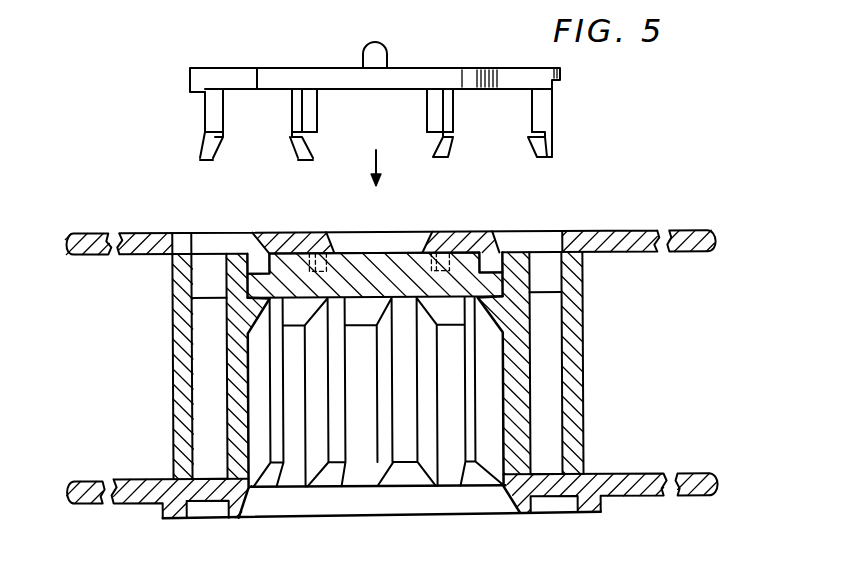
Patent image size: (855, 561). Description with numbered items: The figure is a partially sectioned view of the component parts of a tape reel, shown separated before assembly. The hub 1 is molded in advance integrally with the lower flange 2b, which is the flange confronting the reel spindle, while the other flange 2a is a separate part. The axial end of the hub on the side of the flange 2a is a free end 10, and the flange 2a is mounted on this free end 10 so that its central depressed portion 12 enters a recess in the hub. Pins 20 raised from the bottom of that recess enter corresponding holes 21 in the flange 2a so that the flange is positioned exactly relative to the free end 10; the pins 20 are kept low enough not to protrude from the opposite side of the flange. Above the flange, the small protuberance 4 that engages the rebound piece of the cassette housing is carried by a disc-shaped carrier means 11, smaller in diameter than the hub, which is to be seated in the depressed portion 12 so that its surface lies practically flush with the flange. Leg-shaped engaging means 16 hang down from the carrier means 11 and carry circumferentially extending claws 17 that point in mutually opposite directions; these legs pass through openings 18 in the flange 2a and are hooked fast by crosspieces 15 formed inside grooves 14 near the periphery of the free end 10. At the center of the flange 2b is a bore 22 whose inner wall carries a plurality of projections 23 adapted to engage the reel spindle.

The hub 1 is at (581, 354).
The flange 2a is at (645, 230).
The flange 2b is at (665, 476).
The small protuberance 4 is at (362, 62).
The free end of the hub 10 is at (178, 235).
The disc-shaped carrier means 11 is at (441, 57).
The central depressed portion 12 is at (352, 243).
The grooves 14 is at (550, 402).
The crosspieces 15 is at (200, 283).
The leg-shaped engaging means 16 is at (310, 118).
The claws 17 is at (226, 134).
The openings 18 is at (230, 236).
The pins 20 is at (444, 250).
The holes 21 is at (422, 250).
The bore 22 is at (362, 468).
The projections 23 is at (472, 452).